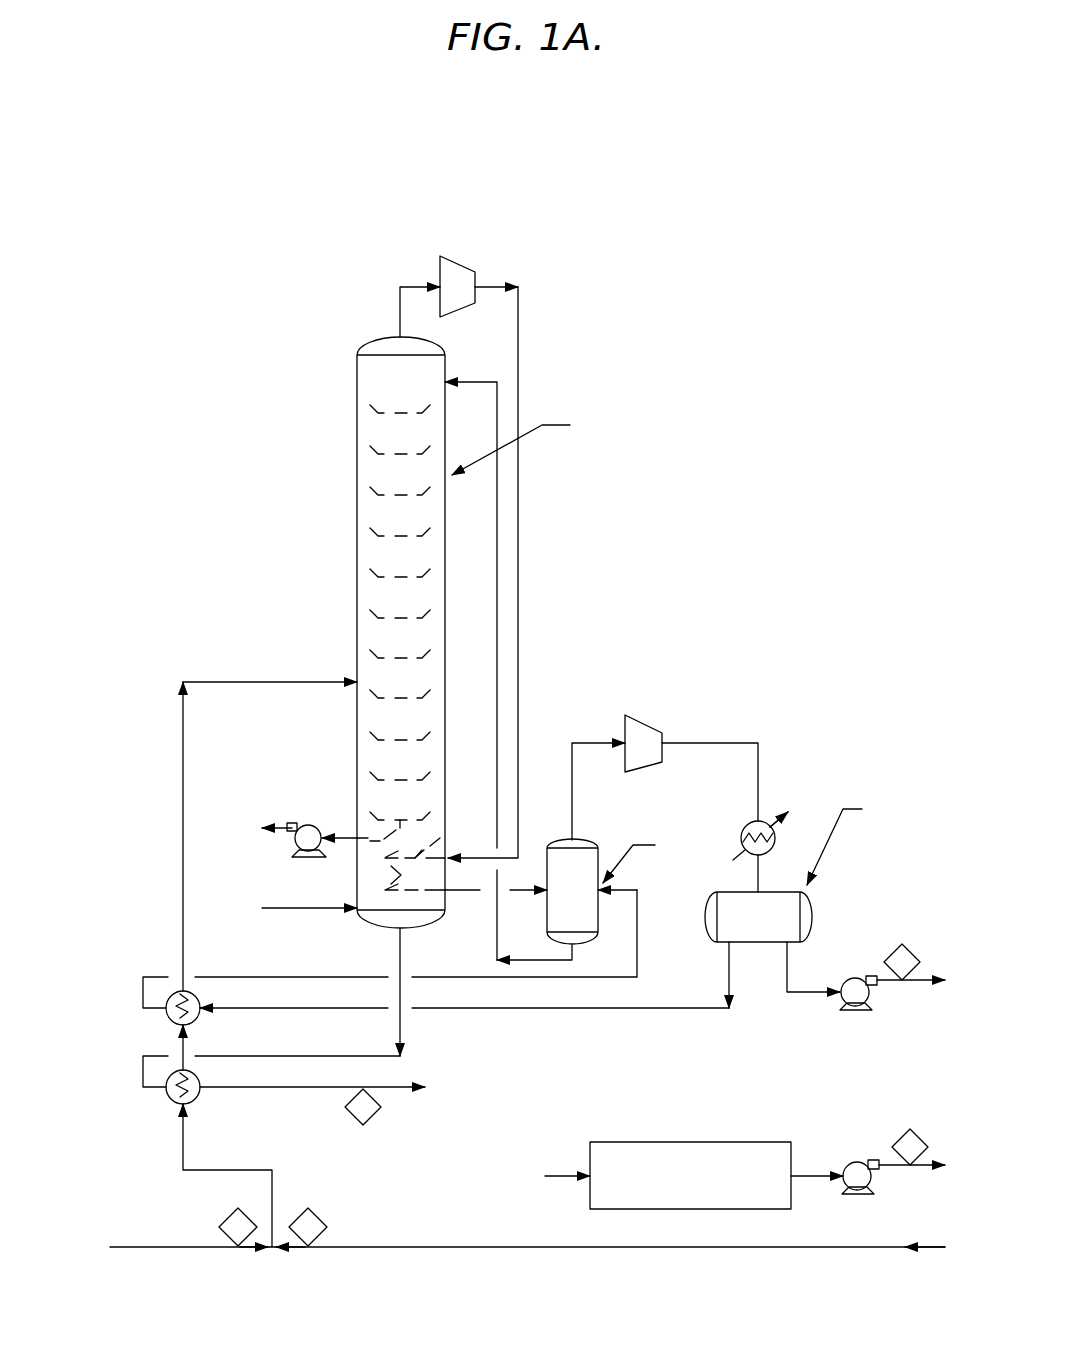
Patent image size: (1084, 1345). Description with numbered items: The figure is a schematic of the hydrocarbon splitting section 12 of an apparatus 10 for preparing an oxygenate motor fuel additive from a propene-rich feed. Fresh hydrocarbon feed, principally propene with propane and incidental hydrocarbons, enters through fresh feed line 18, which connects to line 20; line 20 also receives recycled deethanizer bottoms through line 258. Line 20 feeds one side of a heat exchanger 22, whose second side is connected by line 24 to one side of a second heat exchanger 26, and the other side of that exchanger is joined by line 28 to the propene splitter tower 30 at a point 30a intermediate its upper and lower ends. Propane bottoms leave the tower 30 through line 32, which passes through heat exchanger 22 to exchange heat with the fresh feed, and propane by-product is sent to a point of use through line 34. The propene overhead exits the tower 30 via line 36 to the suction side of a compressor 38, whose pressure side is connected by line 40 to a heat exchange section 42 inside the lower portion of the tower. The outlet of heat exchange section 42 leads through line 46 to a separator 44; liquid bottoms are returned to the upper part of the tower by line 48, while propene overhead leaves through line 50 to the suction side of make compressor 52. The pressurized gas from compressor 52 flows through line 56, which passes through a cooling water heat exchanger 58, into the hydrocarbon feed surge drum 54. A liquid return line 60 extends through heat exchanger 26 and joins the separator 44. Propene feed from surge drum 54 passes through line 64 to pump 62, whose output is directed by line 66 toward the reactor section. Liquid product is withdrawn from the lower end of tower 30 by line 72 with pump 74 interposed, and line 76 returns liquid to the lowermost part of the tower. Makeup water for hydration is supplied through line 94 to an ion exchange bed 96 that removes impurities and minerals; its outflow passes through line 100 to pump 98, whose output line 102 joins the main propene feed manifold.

The apparatus 10 is at (752, 339).
The hydrocarbon splitting section 12 is at (645, 635).
The fresh feed line 18 is at (162, 1250).
The line 20 is at (240, 1168).
The heat exchanger 22 is at (172, 1100).
The line 24 is at (185, 1045).
The second heat exchanger 26 is at (170, 1020).
The line 28 is at (183, 783).
The propene splitter tower 30 is at (357, 475).
The feed point 30a is at (357, 680).
The line 32 is at (402, 968).
The line 34 is at (390, 1087).
The line 36 is at (400, 312).
The compressor 38 is at (470, 270).
The line 40 is at (518, 630).
The heat exchange section 42 is at (444, 836).
The separator 44 is at (553, 905).
The line 46 is at (448, 890).
The line 48 is at (497, 573).
The line 50 is at (572, 808).
The make compressor 52 is at (648, 728).
The hydrocarbon feed surge drum 54 is at (716, 912).
The line 56 is at (725, 748).
The cooling water heat exchanger 58 is at (745, 826).
The liquid return line 60 is at (468, 980).
The pump 62 is at (848, 995).
The line 64 is at (787, 960).
The line 66 is at (918, 984).
The line 72 is at (345, 837).
The pump 74 is at (298, 846).
The line 76 is at (320, 912).
The line 94 is at (545, 1190).
The ion exchange bed 96 is at (670, 1142).
The pump 98 is at (852, 1166).
The line 100 is at (805, 1175).
The output line 102 is at (905, 1168).
The line 258 is at (712, 1250).